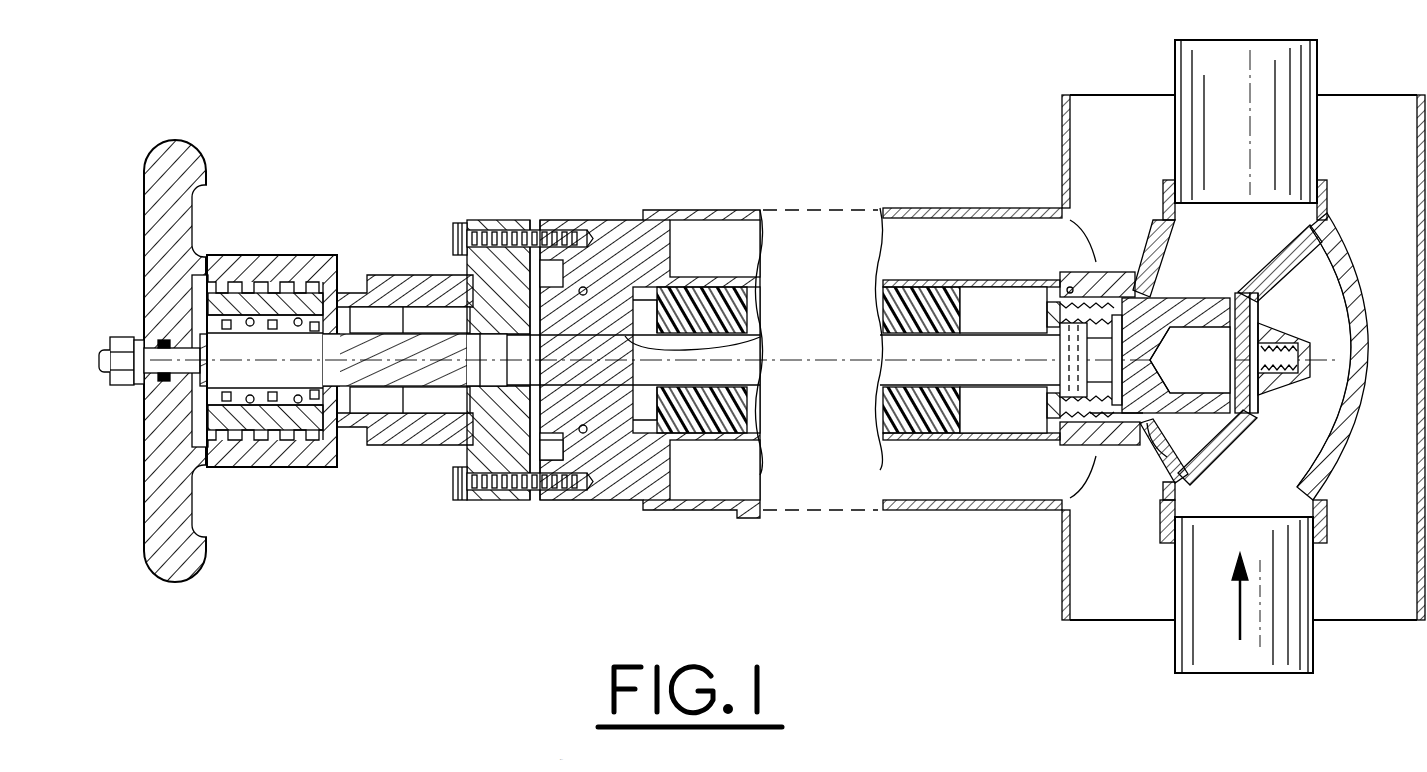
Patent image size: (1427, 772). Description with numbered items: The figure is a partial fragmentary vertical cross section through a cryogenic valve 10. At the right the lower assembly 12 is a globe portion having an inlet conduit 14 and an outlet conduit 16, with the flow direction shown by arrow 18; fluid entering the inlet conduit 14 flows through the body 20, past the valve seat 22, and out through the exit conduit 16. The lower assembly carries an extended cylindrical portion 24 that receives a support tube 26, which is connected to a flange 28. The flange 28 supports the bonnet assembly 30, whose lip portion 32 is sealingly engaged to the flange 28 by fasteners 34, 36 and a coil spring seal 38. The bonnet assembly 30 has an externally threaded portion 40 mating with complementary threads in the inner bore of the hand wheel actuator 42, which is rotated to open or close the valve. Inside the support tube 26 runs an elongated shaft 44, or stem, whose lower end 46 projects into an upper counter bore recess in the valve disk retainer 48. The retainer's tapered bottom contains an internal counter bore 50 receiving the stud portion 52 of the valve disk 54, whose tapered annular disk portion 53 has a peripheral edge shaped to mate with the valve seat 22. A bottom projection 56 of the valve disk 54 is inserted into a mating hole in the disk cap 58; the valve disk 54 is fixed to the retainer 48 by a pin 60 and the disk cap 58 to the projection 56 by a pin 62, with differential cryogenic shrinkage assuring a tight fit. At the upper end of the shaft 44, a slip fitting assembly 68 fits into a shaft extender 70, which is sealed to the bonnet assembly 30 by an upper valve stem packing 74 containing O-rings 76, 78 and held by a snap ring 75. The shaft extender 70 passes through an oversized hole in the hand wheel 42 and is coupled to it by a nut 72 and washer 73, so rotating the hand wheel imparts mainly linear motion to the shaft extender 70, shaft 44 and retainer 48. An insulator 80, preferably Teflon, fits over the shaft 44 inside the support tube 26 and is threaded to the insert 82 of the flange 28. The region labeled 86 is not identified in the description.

The cryogenic valve 10 is at (752, 186).
The lower assembly 12 is at (1350, 238).
The inlet conduit 14 is at (1313, 573).
The outlet conduit 16 is at (1172, 58).
The arrow 18 is at (1237, 623).
The body 20 is at (1350, 467).
The valve seat 22 is at (1258, 420).
The extended cylindrical portion 24 is at (1053, 268).
The support tube 26 is at (888, 270).
The flange 28 is at (615, 210).
The bonnet assembly 30 is at (413, 447).
The lip portion 32 is at (575, 406).
The fastener 34 is at (448, 232).
The fastener 36 is at (450, 480).
The coil spring seal 38 is at (550, 455).
The externally threaded portion 40 is at (352, 275).
The hand wheel actuator 42 is at (233, 255).
The elongated shaft 44 is at (977, 310).
The lower end of shaft 46 is at (1111, 277).
The valve disk retainer 48 is at (1132, 454).
The internal counter bore 50 is at (1205, 343).
The stud portion 52 is at (1208, 300).
The tapered annular disk portion 53 is at (1243, 365).
The valve disk 54 is at (1262, 318).
The bottom projection 56 is at (1283, 373).
The disk cap 58 is at (1343, 336).
The pin 60 is at (1225, 312).
The pin 62 is at (1258, 385).
The slip fitting assembly 68 is at (508, 372).
The shaft extender 70 is at (405, 275).
The nut 72 is at (125, 335).
The washer 73 is at (256, 258).
The upper valve stem packing 74 is at (305, 286).
The snap ring 75 is at (222, 440).
The O-ring 76 is at (274, 439).
The O-ring 78 is at (315, 435).
The insulator 80 is at (881, 412).
The insert 82 is at (763, 337).
The lower packing gland 86 is at (977, 420).